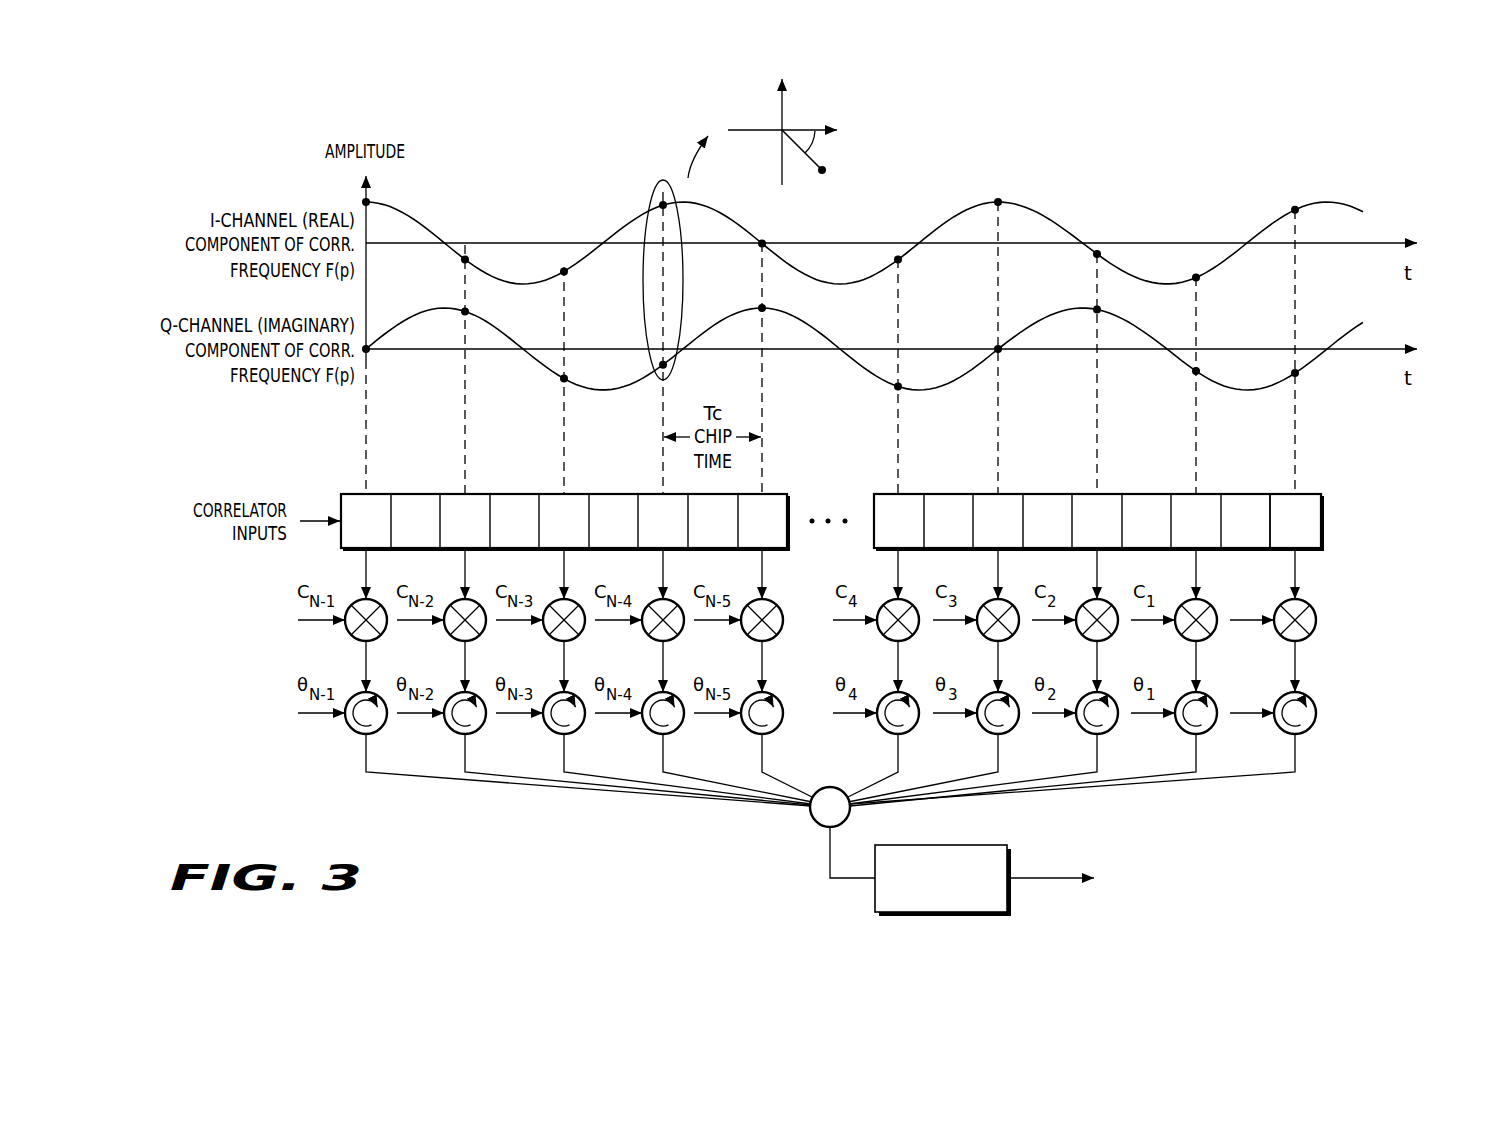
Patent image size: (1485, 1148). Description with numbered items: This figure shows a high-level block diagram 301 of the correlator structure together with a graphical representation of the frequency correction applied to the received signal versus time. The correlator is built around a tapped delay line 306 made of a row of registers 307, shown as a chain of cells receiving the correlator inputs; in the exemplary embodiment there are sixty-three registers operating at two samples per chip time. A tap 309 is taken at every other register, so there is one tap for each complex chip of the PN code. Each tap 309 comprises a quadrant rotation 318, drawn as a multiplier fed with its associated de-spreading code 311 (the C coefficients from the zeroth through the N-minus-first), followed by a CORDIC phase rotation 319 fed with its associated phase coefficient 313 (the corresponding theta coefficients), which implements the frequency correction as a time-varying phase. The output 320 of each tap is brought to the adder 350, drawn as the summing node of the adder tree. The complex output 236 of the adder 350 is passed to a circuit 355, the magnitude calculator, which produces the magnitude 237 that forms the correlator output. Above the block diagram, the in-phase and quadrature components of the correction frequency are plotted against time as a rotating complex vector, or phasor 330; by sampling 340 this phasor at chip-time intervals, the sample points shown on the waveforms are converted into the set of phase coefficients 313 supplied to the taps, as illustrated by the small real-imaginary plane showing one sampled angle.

The high-level block diagram 301 is at (531, 812).
The tapped delay line 306 is at (1337, 521).
The register 307 is at (1317, 494).
The tap 309 is at (1298, 563).
The de-spreading code 311 is at (1245, 624).
The phase coefficient 313 is at (1245, 717).
The quadrant rotation 318 is at (1313, 634).
The CORDIC phase rotation 319 is at (1313, 727).
The tap output 320 is at (1224, 780).
The phasor 330 is at (410, 222).
The sampling 340 is at (805, 156).
The adder 350 is at (825, 788).
The magnitude calculator circuit 355 is at (955, 845).
The complex output 236 is at (845, 878).
The magnitude 237 is at (1050, 876).